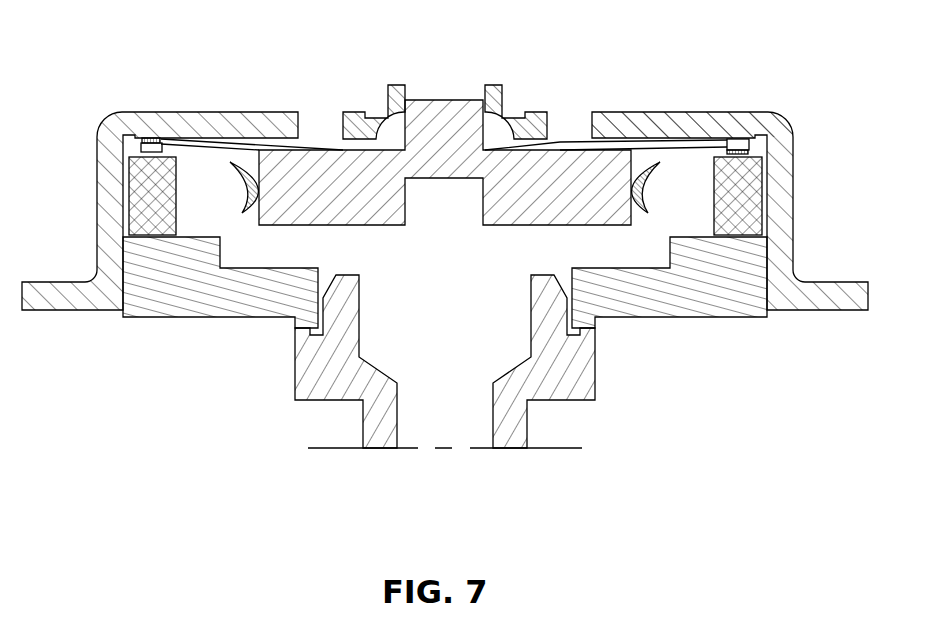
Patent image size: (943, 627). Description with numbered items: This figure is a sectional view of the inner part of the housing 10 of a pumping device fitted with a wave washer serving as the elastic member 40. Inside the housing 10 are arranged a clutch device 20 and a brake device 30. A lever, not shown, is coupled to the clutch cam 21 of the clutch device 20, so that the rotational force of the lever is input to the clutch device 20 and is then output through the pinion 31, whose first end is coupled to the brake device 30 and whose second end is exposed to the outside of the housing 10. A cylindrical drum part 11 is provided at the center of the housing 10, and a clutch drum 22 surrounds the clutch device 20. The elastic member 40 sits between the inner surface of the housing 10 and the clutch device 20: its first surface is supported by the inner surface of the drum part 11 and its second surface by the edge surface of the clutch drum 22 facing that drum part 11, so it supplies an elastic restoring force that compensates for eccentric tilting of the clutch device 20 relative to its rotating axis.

The housing 10 is at (783, 108).
The drum part 11 is at (688, 118).
The clutch device 20 is at (118, 200).
The clutch cam 21 is at (562, 176).
The clutch drum 22 is at (755, 200).
The brake device 30 is at (186, 330).
The pinion 31 is at (383, 430).
The elastic member 40 is at (148, 137).